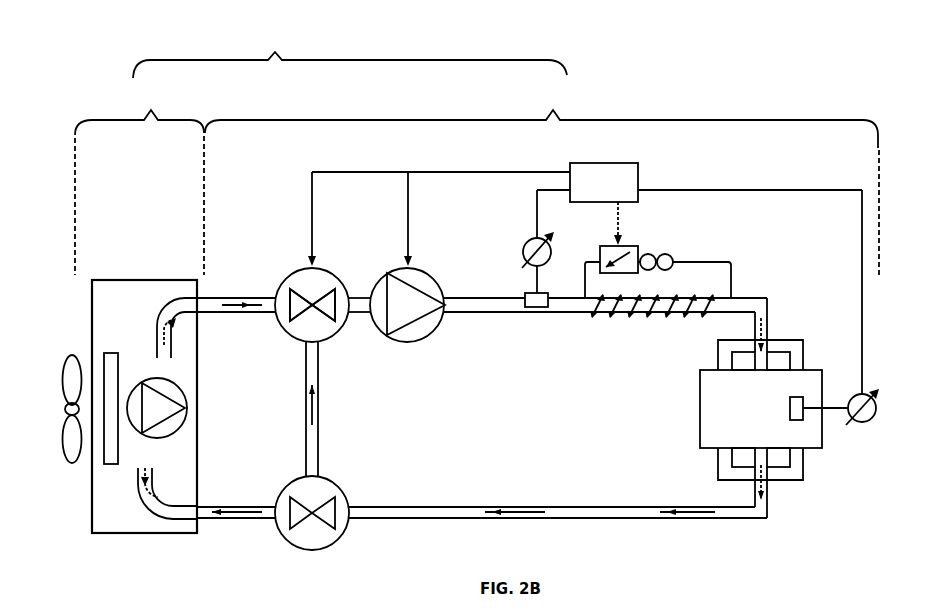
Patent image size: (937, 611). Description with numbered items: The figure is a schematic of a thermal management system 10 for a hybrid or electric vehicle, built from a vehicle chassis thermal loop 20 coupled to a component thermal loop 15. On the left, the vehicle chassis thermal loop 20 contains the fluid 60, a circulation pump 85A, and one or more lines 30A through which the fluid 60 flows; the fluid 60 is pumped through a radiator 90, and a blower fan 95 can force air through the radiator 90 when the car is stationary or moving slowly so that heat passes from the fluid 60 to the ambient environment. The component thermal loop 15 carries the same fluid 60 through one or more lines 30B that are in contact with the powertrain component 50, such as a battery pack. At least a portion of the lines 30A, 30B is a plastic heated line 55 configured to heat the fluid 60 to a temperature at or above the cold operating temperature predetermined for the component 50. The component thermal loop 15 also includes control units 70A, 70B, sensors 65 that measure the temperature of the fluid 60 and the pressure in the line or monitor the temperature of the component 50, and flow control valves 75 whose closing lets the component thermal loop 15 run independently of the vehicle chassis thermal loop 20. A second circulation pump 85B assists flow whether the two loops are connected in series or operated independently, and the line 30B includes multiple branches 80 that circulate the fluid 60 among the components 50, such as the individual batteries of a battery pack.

The thermal management system 10 is at (350, 53).
The component thermal loop 15 is at (542, 183).
The vehicle chassis thermal loop 20 is at (139, 182).
The lines 30A is at (157, 310).
The lines 30B is at (590, 506).
The powertrain component 50 is at (700, 386).
The plastic heated line 55 is at (640, 316).
The fluid 60 is at (157, 338).
The sensors 65 is at (527, 243).
The control unit 70A is at (638, 166).
The control unit 70B is at (632, 246).
The flow control valves 75 is at (290, 276).
The branches 80 is at (803, 345).
The circulation pump 85A is at (187, 405).
The circulation pump 85B is at (445, 339).
The radiator 90 is at (105, 466).
The blower fan 95 is at (62, 370).